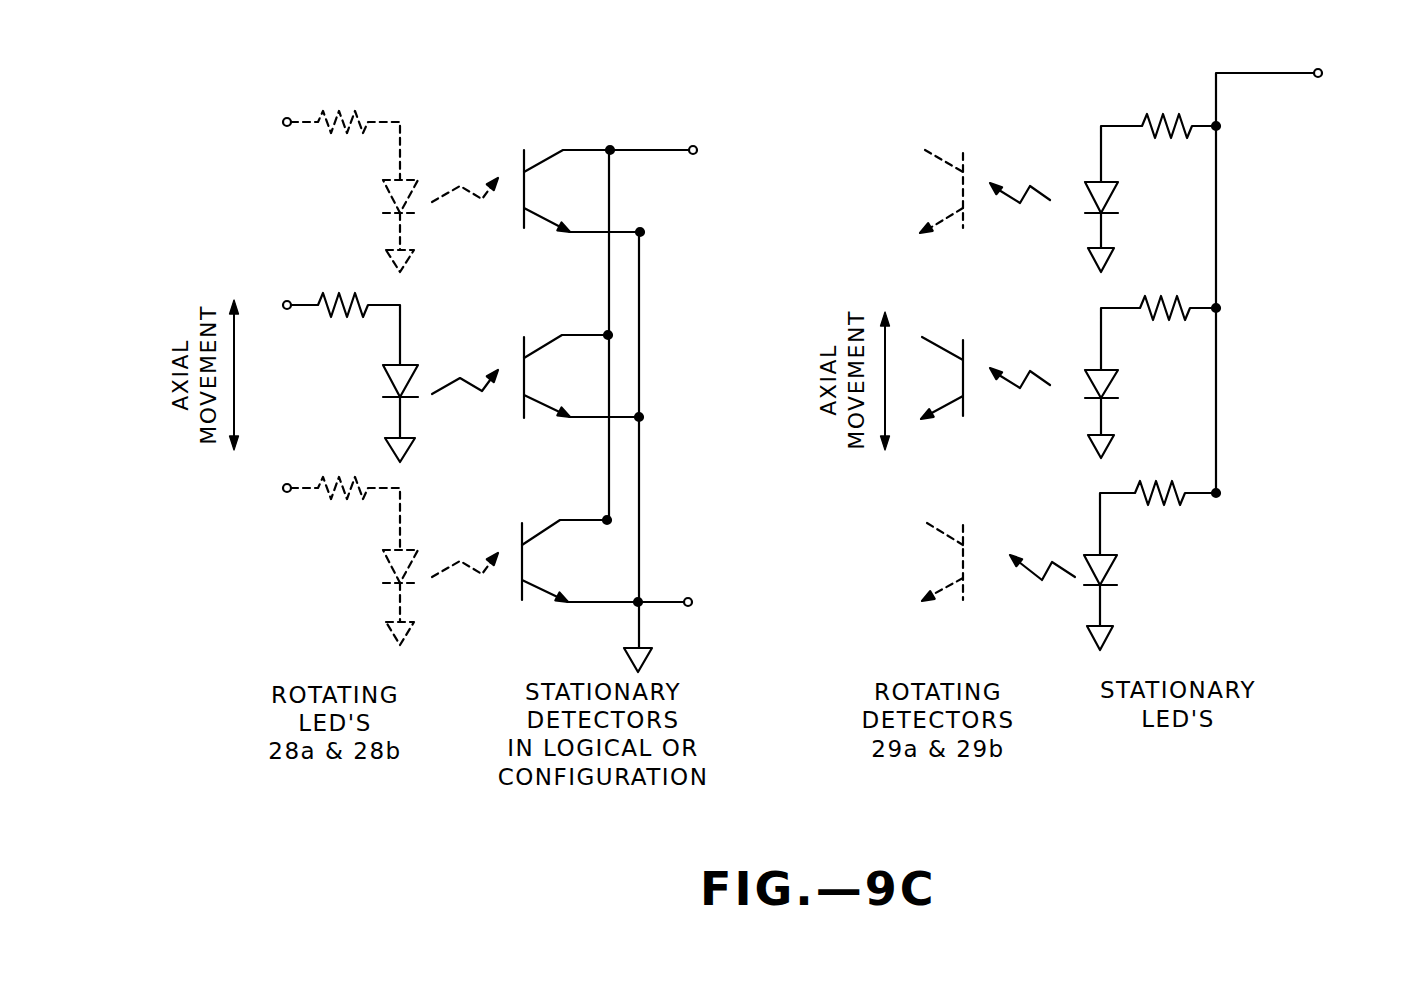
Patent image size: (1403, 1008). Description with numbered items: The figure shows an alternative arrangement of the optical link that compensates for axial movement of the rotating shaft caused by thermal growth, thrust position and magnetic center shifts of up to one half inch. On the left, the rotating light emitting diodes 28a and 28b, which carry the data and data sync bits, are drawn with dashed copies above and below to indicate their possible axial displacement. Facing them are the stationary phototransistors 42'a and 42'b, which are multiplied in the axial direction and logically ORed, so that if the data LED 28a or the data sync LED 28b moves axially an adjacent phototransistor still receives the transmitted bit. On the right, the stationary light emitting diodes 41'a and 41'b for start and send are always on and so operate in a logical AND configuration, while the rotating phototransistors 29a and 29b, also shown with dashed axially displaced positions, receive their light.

The light emitting diode 28a is at (386, 377).
The light emitting diode 28b is at (390, 378).
The phototransistor 42'a is at (623, 146).
The phototransistor 42'b is at (607, 411).
The light emitting diode 41'a is at (1048, 164).
The light emitting diode 41'b is at (1176, 355).
The phototransistor 29a is at (983, 418).
The phototransistor 29b is at (941, 375).